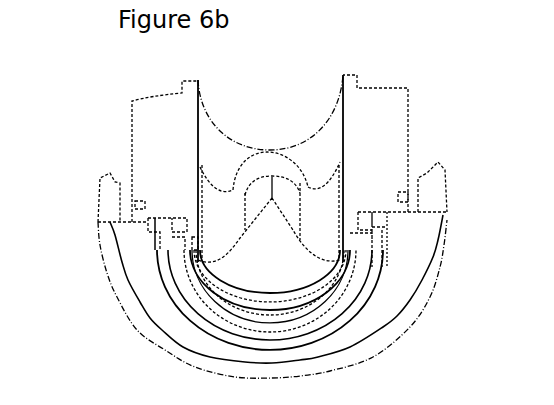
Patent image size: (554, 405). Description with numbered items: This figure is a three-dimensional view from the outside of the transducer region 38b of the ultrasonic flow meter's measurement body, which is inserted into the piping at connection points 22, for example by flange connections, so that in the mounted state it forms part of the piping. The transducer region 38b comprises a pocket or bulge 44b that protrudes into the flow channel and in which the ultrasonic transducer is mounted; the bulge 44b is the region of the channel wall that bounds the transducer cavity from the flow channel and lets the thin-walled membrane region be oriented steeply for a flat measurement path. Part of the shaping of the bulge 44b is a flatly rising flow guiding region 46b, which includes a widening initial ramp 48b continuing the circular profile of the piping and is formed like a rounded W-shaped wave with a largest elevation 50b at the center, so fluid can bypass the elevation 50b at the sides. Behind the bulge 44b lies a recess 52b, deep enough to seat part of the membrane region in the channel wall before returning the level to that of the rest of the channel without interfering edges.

The transducer region 38b is at (444, 74).
The recess 52b is at (281, 165).
The flow guiding region 46b is at (245, 215).
The largest elevation 50b is at (272, 196).
The widening initial ramp 48b is at (272, 272).
The bulge 44b is at (318, 238).
The connection points 22 is at (152, 325).